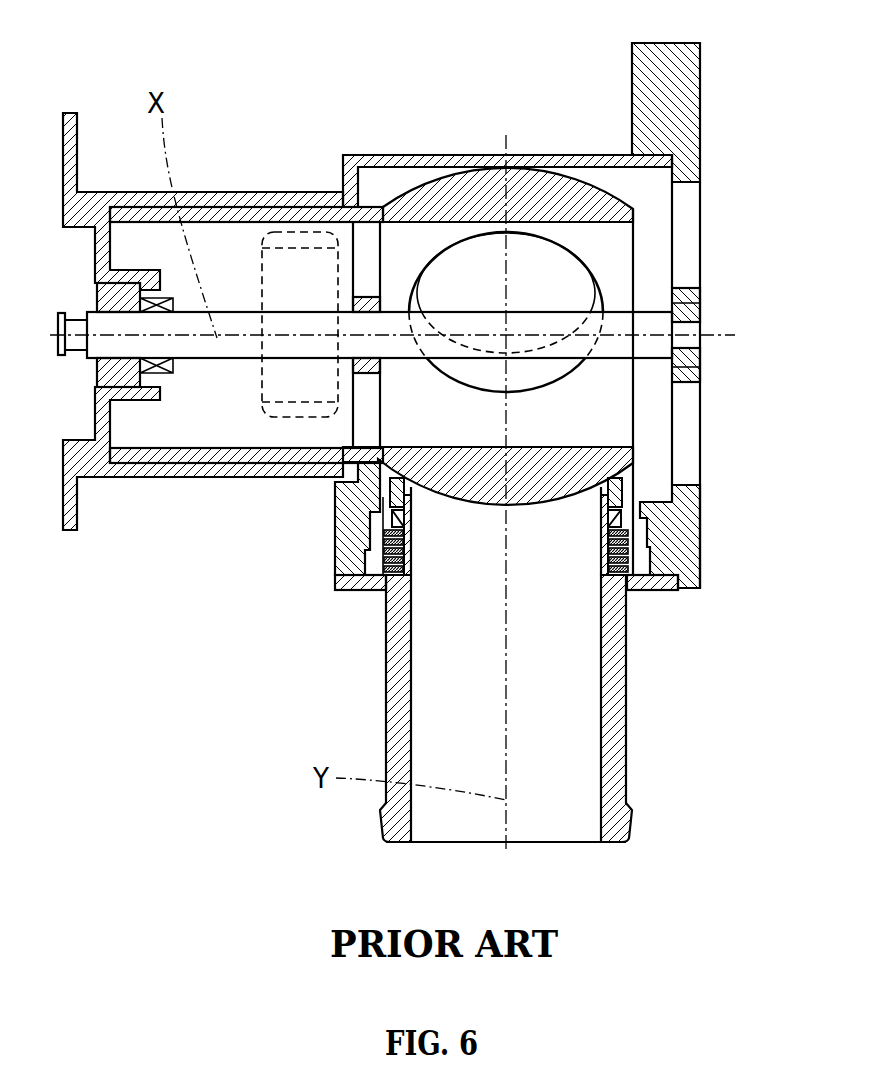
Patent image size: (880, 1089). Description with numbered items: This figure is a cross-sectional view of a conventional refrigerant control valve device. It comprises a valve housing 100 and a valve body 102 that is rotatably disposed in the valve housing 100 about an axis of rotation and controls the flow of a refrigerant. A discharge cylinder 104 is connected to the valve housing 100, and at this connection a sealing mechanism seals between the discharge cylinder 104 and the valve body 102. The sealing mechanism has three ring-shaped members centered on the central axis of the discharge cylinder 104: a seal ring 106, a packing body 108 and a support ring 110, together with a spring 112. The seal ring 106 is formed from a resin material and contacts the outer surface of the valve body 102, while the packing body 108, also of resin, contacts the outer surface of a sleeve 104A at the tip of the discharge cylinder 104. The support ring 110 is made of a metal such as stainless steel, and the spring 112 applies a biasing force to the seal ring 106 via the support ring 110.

The valve housing 100 is at (530, 153).
The valve body 102 is at (450, 170).
The discharge cylinder 104 is at (387, 752).
The sleeve 104A is at (411, 552).
The seal ring 106 is at (392, 484).
The packing body 108 is at (407, 513).
The support ring 110 is at (381, 506).
The spring 112 is at (388, 580).